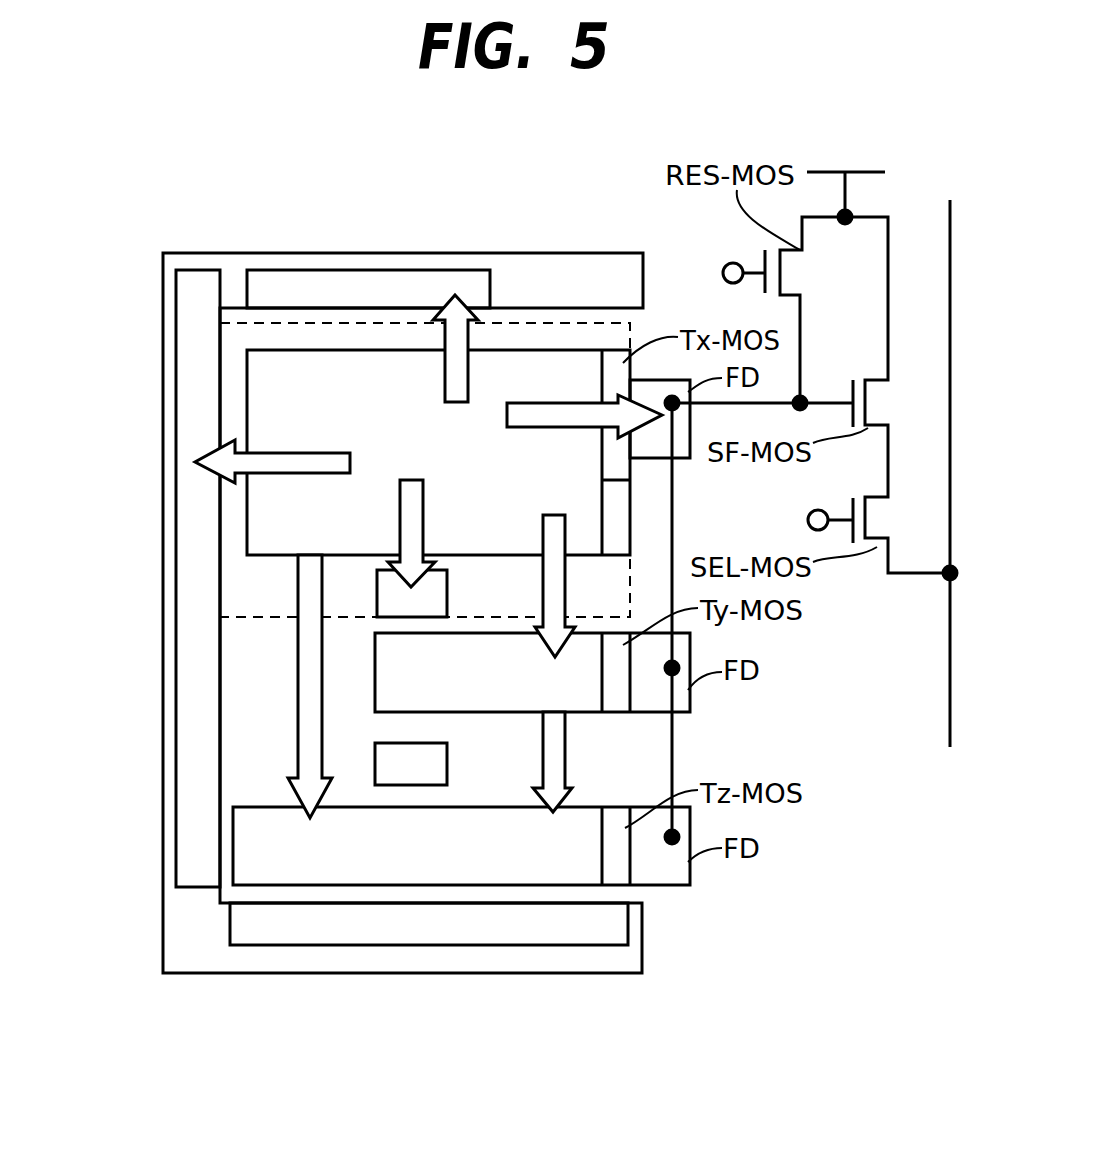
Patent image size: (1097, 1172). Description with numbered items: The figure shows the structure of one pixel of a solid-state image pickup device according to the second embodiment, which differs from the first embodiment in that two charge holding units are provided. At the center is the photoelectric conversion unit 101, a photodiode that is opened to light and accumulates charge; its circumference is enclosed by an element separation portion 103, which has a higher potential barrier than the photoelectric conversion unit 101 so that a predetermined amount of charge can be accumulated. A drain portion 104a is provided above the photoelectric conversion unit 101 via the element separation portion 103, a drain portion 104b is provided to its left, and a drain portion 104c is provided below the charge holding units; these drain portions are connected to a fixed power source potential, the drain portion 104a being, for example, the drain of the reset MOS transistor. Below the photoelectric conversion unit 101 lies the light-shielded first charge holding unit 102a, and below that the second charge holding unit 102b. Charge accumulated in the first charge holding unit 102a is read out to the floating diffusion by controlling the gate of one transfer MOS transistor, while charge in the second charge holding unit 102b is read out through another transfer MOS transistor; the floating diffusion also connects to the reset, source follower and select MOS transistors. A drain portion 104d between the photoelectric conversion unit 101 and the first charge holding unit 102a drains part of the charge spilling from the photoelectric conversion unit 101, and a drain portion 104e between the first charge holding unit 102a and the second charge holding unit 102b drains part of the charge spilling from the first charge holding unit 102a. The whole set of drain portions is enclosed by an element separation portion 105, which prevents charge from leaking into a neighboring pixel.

The photoelectric conversion unit 101 is at (560, 360).
The first charge holding unit 102a is at (578, 713).
The second charge holding unit 102b is at (492, 813).
The element separation portion 103 is at (257, 620).
The drain portion 104a is at (385, 275).
The drain portion 104b is at (182, 418).
The drain portion 104c is at (463, 937).
The drain portion 104d is at (448, 597).
The drain portion 104e is at (375, 760).
The element separation portion 105 is at (545, 258).